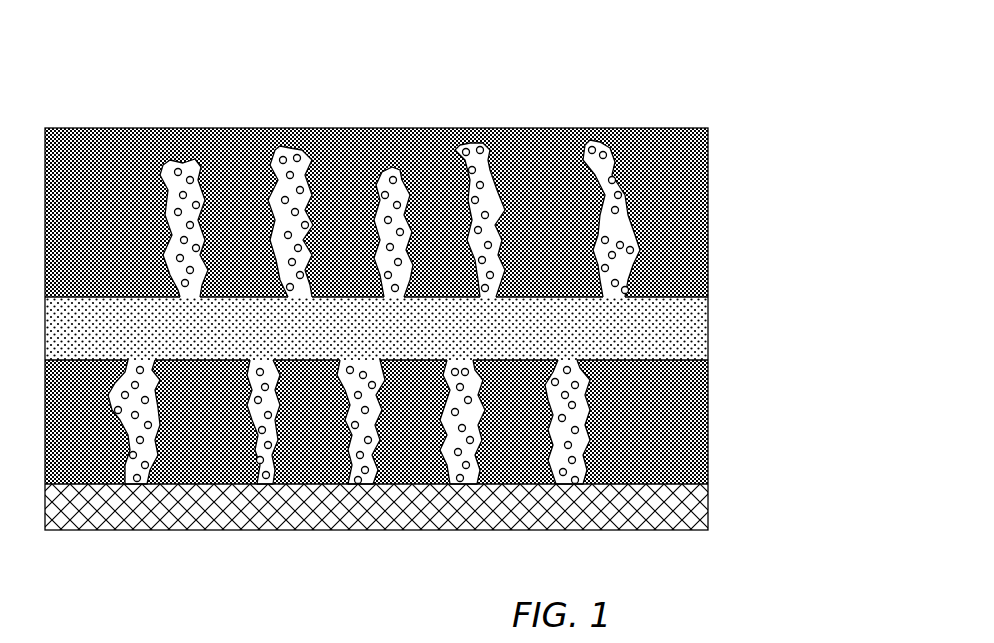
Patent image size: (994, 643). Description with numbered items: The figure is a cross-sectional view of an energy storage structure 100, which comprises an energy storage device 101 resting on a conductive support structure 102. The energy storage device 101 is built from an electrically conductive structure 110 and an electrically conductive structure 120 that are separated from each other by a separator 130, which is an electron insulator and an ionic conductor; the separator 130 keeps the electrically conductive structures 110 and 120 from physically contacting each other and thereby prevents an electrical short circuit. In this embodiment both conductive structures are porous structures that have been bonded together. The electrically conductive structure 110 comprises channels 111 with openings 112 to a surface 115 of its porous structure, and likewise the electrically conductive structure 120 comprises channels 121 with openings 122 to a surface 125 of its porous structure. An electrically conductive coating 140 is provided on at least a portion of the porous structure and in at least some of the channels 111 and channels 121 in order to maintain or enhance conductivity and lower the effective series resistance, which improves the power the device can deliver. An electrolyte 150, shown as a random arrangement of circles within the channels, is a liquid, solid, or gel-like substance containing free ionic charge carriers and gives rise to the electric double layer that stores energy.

The energy storage structure 100 is at (456, 309).
The energy storage device 101 is at (456, 323).
The conductive support structure 102 is at (313, 500).
The electrically conductive structure 110 is at (376, 451).
The channels 111 is at (349, 451).
The openings 112 is at (459, 350).
The surface 115 is at (376, 398).
The electrically conductive structure 120 is at (376, 203).
The channels 121 is at (399, 203).
The openings 122 is at (187, 308).
The surface 125 is at (63, 290).
The separator 130 is at (708, 331).
The electrically conductive coating 140 is at (606, 176).
The electrolyte 150 is at (478, 155).